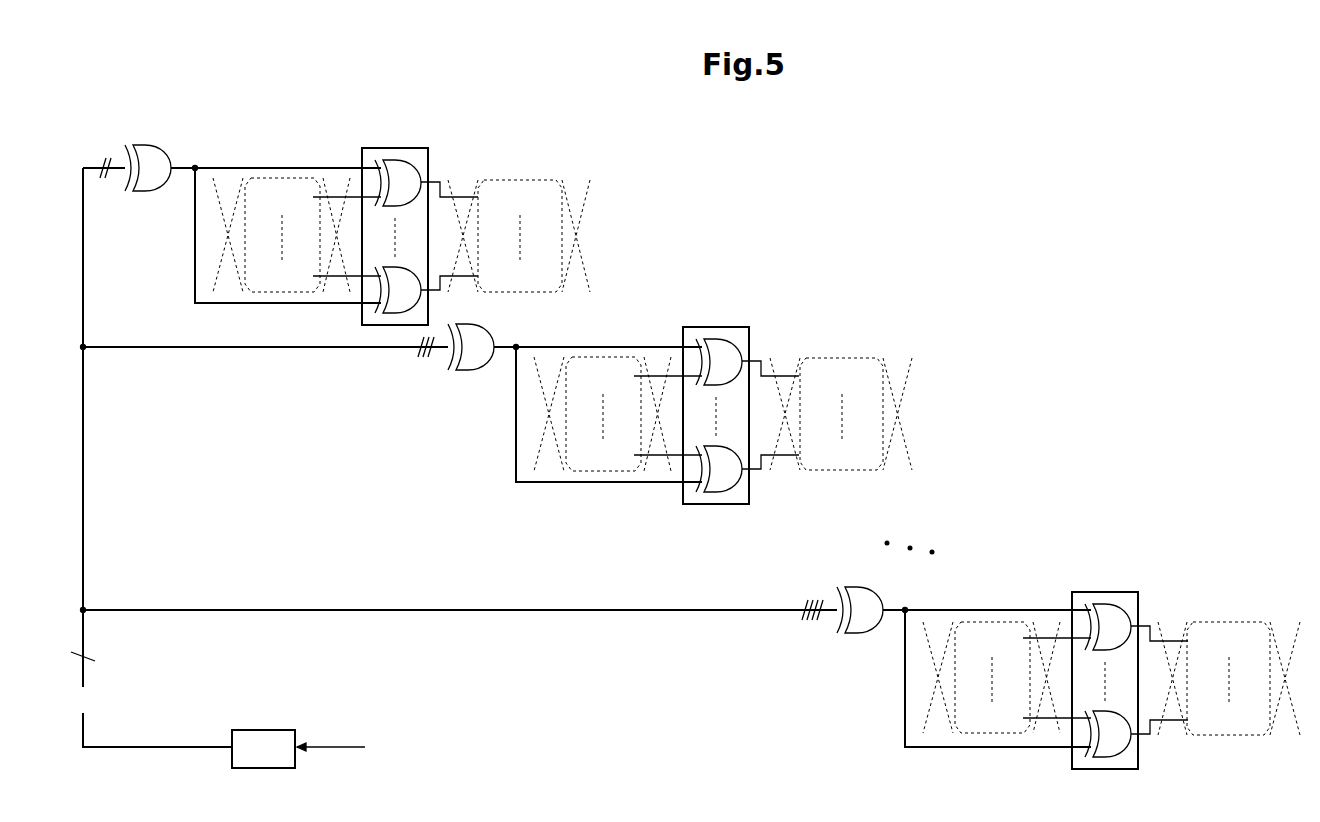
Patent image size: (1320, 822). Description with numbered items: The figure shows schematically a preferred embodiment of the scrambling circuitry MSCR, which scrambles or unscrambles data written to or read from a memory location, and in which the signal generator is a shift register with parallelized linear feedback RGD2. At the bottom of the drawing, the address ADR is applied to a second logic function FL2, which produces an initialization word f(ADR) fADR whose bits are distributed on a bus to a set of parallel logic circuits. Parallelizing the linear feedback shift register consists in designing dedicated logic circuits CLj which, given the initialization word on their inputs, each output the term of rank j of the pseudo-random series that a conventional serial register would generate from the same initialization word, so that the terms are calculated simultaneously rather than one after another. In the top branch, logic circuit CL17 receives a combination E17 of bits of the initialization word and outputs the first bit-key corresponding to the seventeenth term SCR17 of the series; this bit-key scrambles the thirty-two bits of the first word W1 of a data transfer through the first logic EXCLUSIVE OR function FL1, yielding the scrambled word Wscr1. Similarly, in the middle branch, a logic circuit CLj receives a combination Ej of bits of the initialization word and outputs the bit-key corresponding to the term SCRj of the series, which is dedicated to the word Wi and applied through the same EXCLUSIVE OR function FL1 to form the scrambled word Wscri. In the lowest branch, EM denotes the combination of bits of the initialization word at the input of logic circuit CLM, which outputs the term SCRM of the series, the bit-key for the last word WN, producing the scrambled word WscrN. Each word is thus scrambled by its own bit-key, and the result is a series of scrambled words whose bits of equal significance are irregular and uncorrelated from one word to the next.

The combination of bits of the initialization word E17 is at (101, 162).
The logic circuit CL17 is at (153, 146).
The seventeenth term of the pseudo-random series SCR17 is at (185, 163).
The first word W1 is at (283, 177).
The first logic EXCLUSIVE OR function FL1 is at (392, 147).
The scrambled word Wscr1 is at (520, 177).
The scrambling circuitry MSCR is at (1010, 264).
The combination of bits of the initialization word Ej is at (416, 376).
The logic circuit CLj is at (471, 369).
The term of rank j of the pseudo-random series SCRj is at (511, 434).
The word Wi is at (609, 398).
The scrambled word Wscri is at (841, 392).
The combination of bits of the initialization word EM is at (800, 639).
The logic circuit CLM is at (861, 632).
The M-th term of the pseudo-random series SCRM is at (891, 698).
The word WN is at (998, 663).
The scrambled word WscrN is at (1229, 657).
The second logic function FL2 is at (263, 749).
The address ADR is at (353, 748).
The initialization word fADR is at (142, 457).
The shift register with parallelized linear feedback RGD2 is at (543, 697).